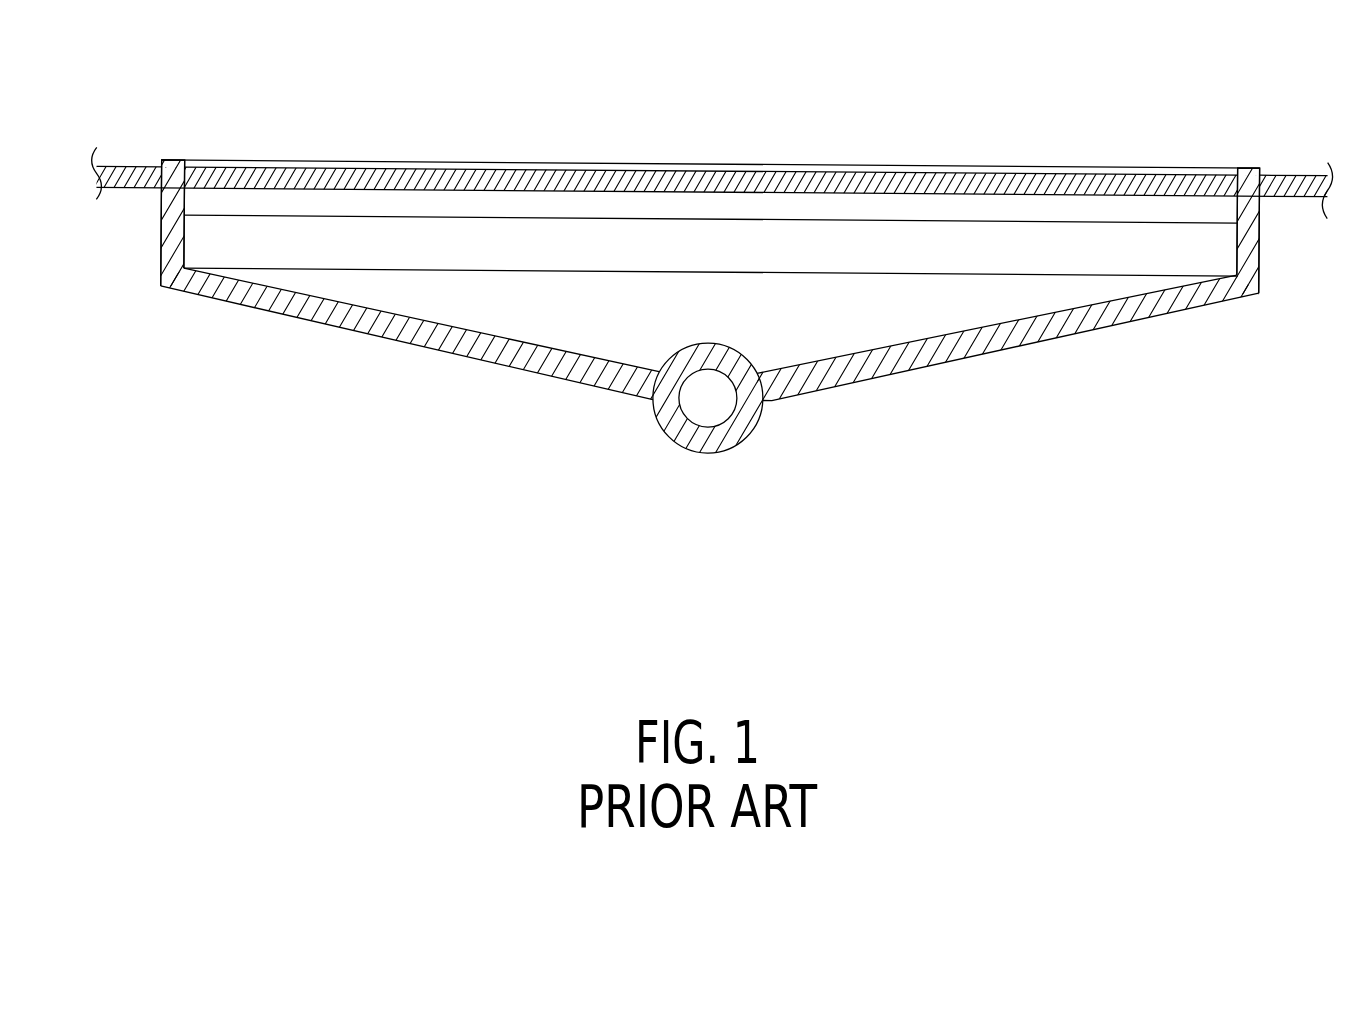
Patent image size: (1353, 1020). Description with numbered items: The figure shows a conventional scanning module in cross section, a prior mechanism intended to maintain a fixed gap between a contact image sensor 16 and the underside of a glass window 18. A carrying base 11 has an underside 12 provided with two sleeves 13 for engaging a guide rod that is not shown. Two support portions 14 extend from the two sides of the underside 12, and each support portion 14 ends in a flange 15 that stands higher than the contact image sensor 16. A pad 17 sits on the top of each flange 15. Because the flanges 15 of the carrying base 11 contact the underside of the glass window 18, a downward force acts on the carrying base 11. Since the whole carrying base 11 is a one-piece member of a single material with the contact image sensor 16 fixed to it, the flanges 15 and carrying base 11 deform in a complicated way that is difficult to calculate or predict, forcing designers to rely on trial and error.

The carrying base 11 is at (603, 412).
The underside 12 is at (657, 334).
The sleeve 13 is at (748, 420).
The support portion 14 is at (402, 328).
The flange 15 is at (170, 260).
The contact image sensor 16 is at (907, 248).
The pad 17 is at (175, 195).
The glass window 18 is at (818, 180).